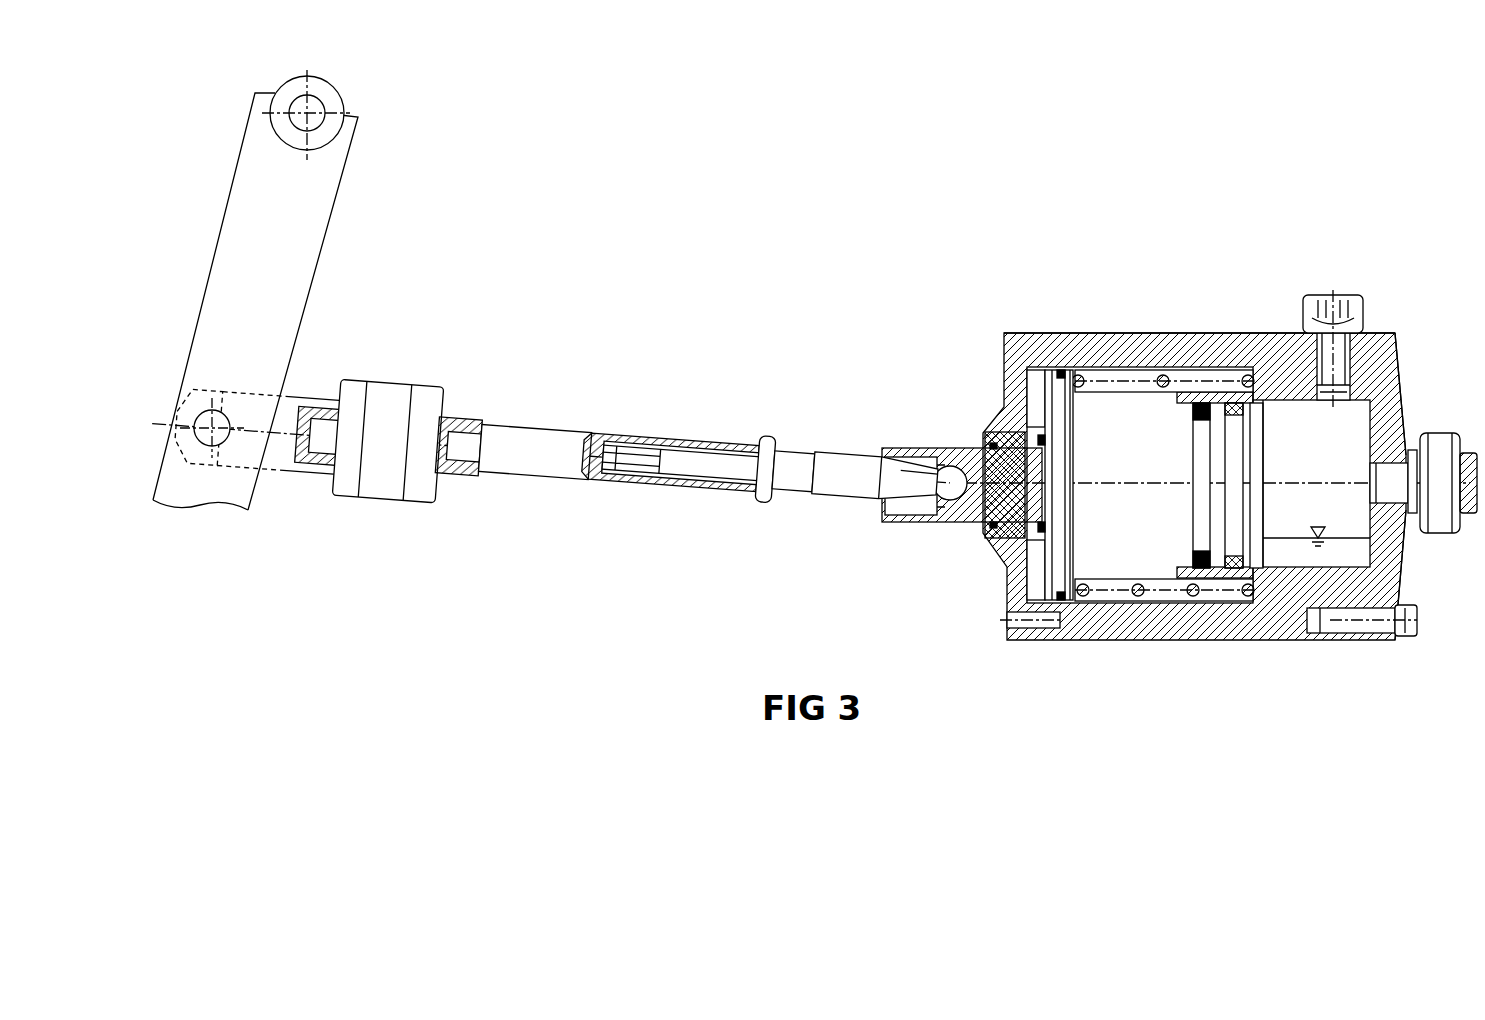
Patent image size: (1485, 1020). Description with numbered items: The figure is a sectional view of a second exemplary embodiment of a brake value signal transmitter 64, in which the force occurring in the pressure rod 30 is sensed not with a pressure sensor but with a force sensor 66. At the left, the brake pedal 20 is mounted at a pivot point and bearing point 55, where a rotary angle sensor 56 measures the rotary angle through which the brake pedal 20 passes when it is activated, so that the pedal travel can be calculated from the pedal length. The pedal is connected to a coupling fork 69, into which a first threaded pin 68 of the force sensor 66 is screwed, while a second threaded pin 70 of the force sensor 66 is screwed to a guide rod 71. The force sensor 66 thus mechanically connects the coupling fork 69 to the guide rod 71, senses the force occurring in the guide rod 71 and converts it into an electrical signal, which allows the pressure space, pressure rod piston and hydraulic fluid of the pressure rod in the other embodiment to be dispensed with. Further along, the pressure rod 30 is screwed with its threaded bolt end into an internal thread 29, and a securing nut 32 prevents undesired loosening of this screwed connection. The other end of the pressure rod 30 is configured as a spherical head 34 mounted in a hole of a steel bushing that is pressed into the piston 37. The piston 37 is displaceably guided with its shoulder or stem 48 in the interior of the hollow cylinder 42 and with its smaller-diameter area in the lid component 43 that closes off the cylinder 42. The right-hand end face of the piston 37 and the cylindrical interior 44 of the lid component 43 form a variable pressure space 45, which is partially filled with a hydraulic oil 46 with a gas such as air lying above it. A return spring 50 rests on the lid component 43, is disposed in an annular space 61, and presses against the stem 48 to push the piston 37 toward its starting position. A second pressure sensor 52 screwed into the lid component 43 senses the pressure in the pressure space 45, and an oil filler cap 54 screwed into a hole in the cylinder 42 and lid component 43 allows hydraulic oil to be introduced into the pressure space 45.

The brake pedal 20 is at (322, 205).
The pivot point and bearing point 55 is at (318, 107).
The rotary angle sensor 56 is at (343, 107).
The coupling fork 69 is at (310, 403).
The first threaded pin 68 is at (321, 447).
The force sensor 66 is at (387, 482).
The second threaded pin 70 is at (453, 453).
The guide rod 71 is at (520, 467).
The internal thread 29 is at (707, 442).
The securing nut 32 is at (770, 437).
The pressure rod 30 is at (837, 487).
The spherical head 34 is at (948, 495).
The hollow cylinder 42 is at (1023, 353).
The brake value signal transmitter 64 is at (1113, 303).
The return spring 50 is at (1165, 378).
The shoulder or stem 48 is at (1058, 427).
The cylindrical interior 44 is at (1355, 403).
The oil filler cap 54 is at (1310, 293).
The lid component 43 is at (1380, 340).
The second pressure sensor 52 is at (1428, 467).
The variable pressure space 45 is at (1355, 510).
The hydraulic oil 46 is at (1308, 553).
The piston 37 is at (1110, 573).
The annular space 61 is at (1160, 572).